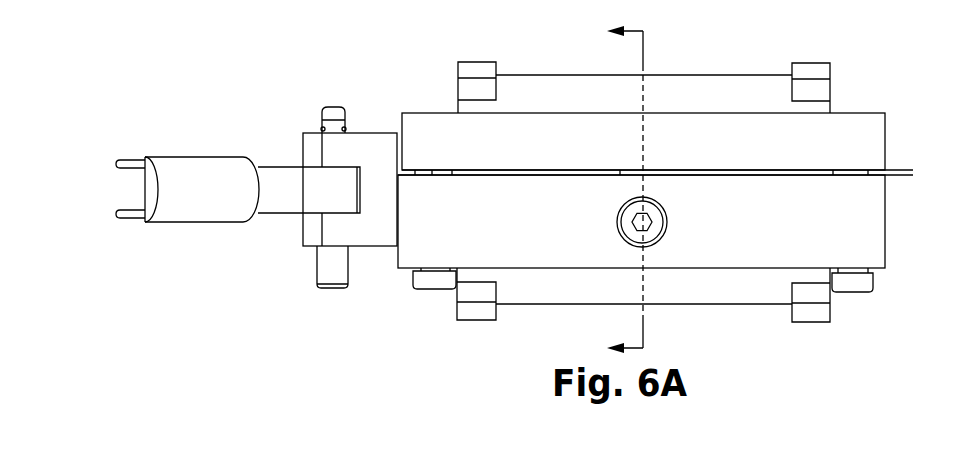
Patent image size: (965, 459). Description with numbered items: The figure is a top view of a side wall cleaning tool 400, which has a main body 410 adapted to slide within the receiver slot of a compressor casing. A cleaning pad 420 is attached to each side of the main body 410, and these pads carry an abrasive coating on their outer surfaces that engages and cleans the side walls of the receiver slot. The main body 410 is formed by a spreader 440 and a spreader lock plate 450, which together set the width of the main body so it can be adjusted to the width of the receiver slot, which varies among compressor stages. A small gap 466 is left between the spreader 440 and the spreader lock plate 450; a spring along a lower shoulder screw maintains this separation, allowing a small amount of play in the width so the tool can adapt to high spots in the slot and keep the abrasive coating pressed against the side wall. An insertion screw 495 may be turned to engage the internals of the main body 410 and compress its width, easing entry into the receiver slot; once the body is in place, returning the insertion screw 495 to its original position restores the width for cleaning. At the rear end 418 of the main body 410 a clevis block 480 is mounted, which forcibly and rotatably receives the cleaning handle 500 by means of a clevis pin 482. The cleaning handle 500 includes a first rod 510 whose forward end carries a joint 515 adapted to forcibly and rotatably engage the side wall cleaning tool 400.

The side wall cleaning tool 400 is at (869, 39).
The main body 410 is at (674, 144).
The rear end 418 is at (393, 248).
The cleaning pad 420 is at (563, 93).
The spreader 440 is at (690, 145).
The spreader lock plate 450 is at (733, 215).
The small gap 466 is at (905, 127).
The clevis block 480 is at (382, 133).
The clevis pin 482 is at (333, 106).
The insertion screw 495 is at (658, 245).
The cleaning handle 500 is at (195, 140).
The first rod 510 is at (208, 223).
The joint 515 is at (340, 193).